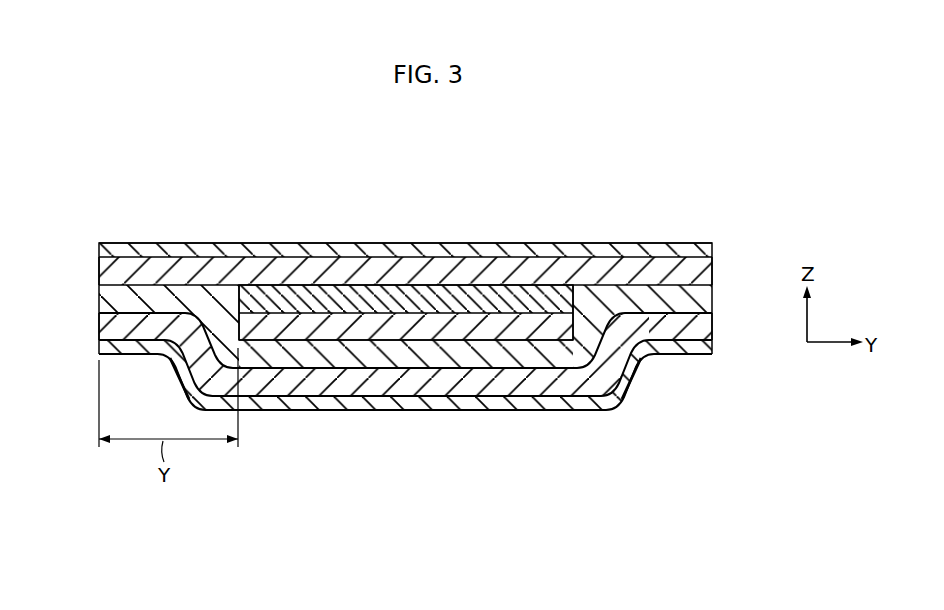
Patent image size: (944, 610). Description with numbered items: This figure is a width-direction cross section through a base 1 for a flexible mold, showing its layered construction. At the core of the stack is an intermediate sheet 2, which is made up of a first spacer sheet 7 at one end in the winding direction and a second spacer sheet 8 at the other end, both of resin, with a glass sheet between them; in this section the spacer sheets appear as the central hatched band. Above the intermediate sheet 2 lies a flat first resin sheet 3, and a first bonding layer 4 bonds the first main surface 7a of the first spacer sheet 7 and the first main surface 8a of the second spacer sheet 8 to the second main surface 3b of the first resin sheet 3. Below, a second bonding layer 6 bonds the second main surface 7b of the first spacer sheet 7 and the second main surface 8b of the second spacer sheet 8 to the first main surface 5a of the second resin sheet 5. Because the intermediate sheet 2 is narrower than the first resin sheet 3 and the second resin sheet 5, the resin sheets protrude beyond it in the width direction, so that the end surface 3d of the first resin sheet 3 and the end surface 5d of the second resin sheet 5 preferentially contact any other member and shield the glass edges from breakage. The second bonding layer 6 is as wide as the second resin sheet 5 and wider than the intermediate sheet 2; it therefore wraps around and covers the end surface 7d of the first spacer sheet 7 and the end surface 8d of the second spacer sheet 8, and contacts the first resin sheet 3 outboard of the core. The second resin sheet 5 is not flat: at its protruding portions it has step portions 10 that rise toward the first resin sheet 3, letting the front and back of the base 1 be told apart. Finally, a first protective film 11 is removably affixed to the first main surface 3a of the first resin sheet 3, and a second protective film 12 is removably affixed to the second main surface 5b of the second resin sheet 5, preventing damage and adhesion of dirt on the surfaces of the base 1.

The base 1 is at (398, 210).
The intermediate sheet 2 is at (395, 309).
The first resin sheet 3 is at (403, 244).
The first main surface of the first resin sheet 3a is at (483, 260).
The second main surface of the first resin sheet 3b is at (455, 290).
The end surface of the first resin sheet 3d is at (99, 271).
The first bonding layer 4 is at (553, 297).
The second resin sheet 5 is at (403, 387).
The first main surface of the second resin sheet 5a is at (470, 363).
The second main surface of the second resin sheet 5b is at (405, 392).
The end surface of the second resin sheet 5d is at (99, 326).
The second bonding layer 6 is at (563, 358).
The first spacer sheet 7 is at (400, 330).
The first main surface of the first spacer sheet 7a is at (298, 312).
The second main surface of the first spacer sheet 7b is at (288, 342).
The end surface of the first spacer sheet 7d is at (238, 328).
The second spacer sheet 8 is at (400, 330).
The first main surface of the second spacer sheet 8a is at (406, 256).
The second main surface of the second spacer sheet 8b is at (406, 416).
The end surface of the second spacer sheet 8d is at (400, 254).
The step portion 10 is at (188, 374).
The first protective film 11 is at (637, 249).
The second protective film 12 is at (522, 407).